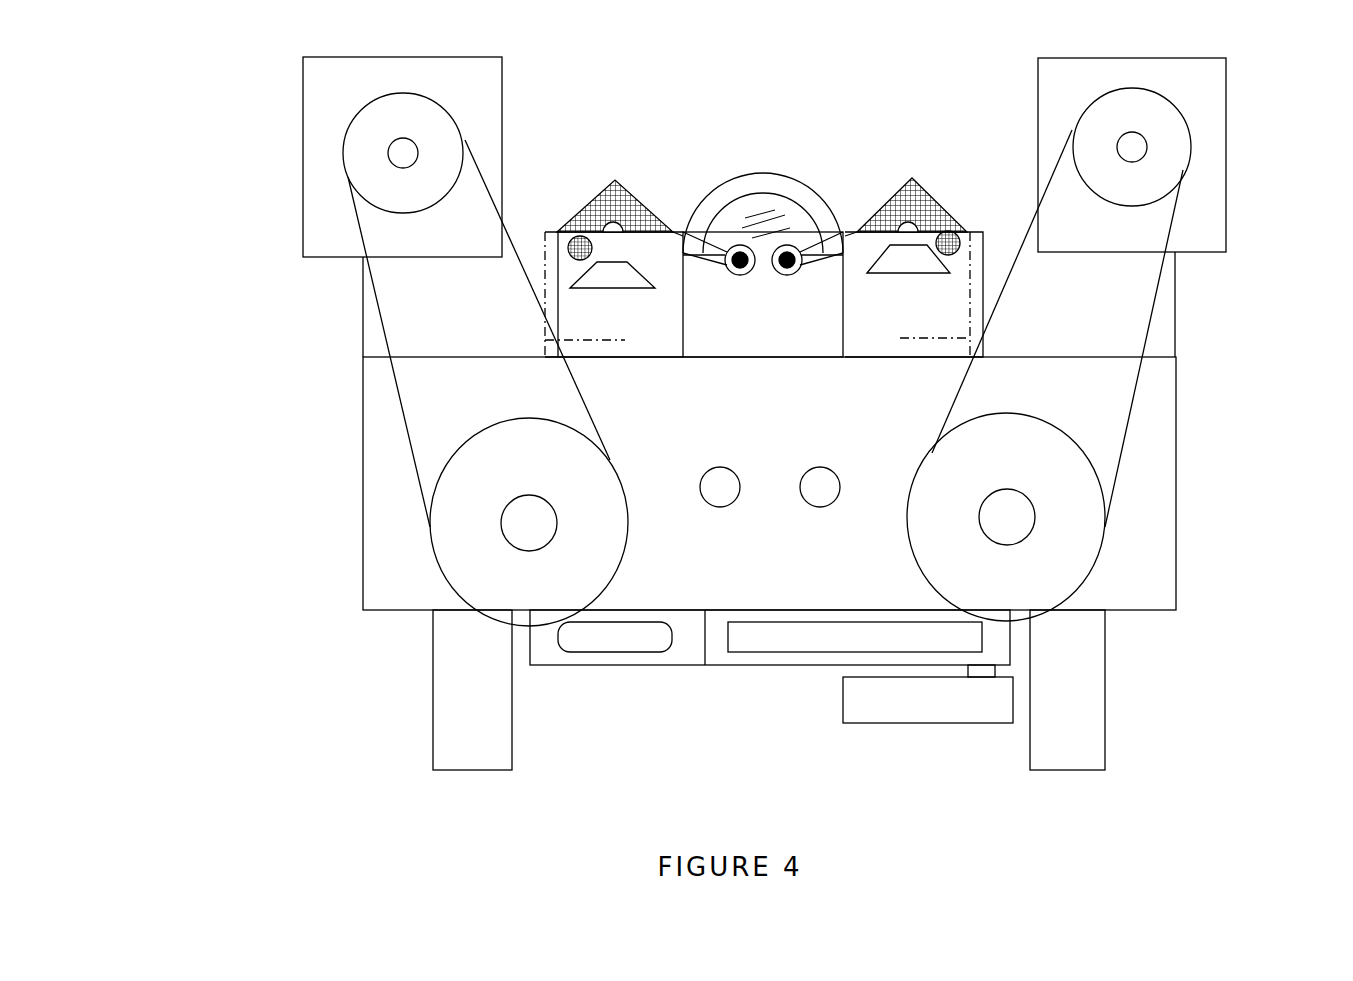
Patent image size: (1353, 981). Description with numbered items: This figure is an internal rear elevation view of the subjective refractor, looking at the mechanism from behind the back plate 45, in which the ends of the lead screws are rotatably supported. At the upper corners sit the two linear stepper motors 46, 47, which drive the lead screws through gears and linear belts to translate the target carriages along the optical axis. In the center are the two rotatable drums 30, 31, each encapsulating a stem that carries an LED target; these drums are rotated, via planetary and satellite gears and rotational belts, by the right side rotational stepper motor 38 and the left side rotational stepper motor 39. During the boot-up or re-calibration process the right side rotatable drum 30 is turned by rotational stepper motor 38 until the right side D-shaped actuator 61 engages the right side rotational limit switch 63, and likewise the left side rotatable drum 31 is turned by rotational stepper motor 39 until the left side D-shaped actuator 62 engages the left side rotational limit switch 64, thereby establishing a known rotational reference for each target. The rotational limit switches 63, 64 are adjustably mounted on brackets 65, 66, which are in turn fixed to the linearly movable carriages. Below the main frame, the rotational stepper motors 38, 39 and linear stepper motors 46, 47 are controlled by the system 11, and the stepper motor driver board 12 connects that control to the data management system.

The system 11 is at (753, 667).
The stepper motor driver board 12 is at (840, 690).
The right side rotatable drum 30 is at (730, 278).
The left side rotatable drum 31 is at (795, 278).
The right side rotational stepper motor 38 is at (600, 191).
The left side rotational stepper motor 39 is at (927, 182).
The back plate 45 is at (1130, 483).
The linear stepper motor 46 is at (333, 130).
The linear stepper motor 47 is at (1200, 110).
The right side D-shaped actuator 61 is at (615, 273).
The left side D-shaped actuator 62 is at (907, 260).
The right side rotational limit switch 63 is at (577, 234).
The left side rotational limit switch 64 is at (943, 243).
The bracket 65 is at (547, 340).
The bracket 66 is at (973, 290).